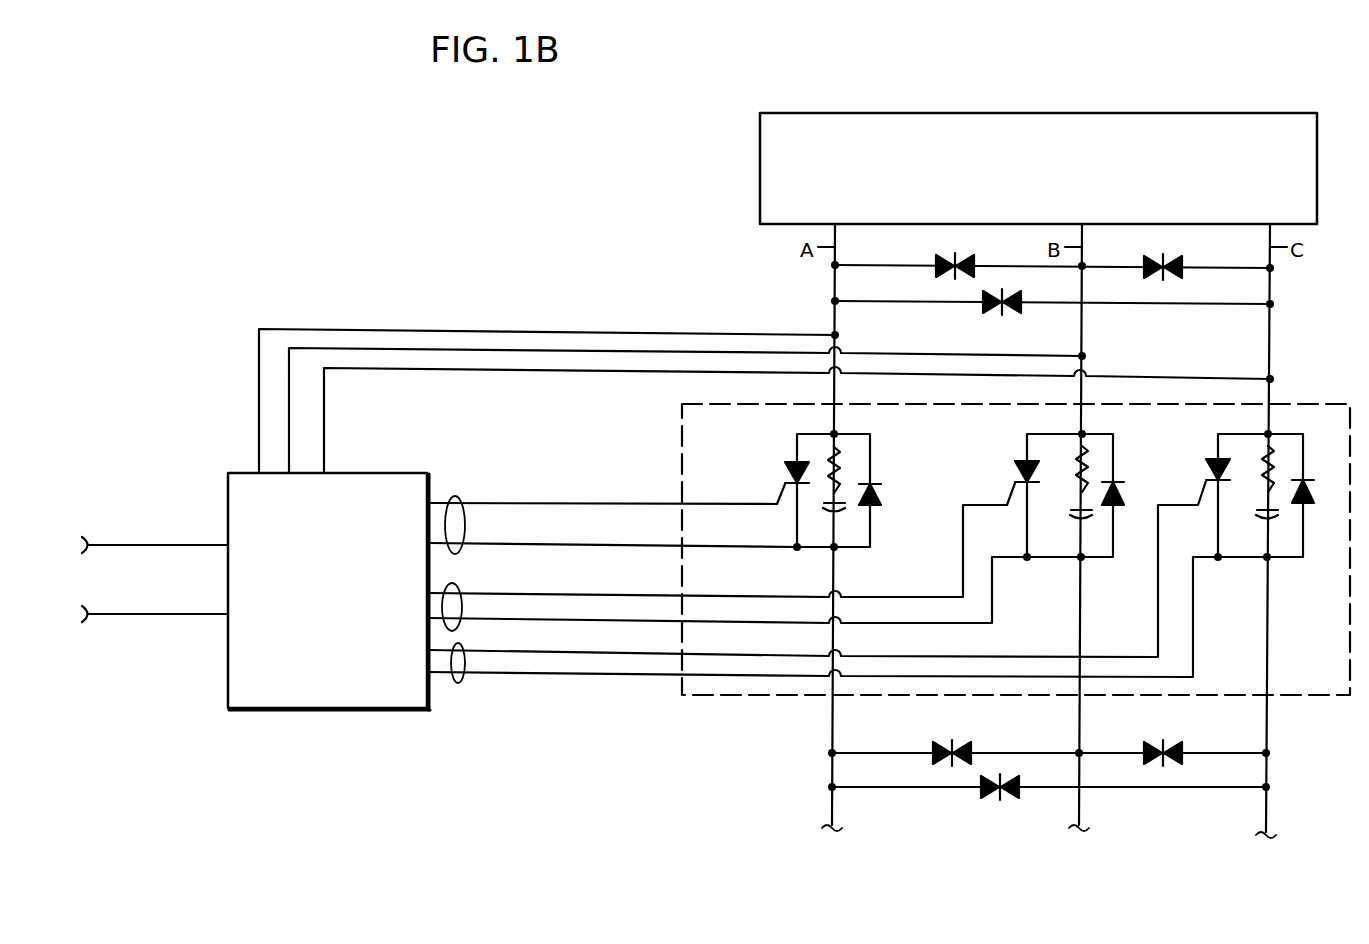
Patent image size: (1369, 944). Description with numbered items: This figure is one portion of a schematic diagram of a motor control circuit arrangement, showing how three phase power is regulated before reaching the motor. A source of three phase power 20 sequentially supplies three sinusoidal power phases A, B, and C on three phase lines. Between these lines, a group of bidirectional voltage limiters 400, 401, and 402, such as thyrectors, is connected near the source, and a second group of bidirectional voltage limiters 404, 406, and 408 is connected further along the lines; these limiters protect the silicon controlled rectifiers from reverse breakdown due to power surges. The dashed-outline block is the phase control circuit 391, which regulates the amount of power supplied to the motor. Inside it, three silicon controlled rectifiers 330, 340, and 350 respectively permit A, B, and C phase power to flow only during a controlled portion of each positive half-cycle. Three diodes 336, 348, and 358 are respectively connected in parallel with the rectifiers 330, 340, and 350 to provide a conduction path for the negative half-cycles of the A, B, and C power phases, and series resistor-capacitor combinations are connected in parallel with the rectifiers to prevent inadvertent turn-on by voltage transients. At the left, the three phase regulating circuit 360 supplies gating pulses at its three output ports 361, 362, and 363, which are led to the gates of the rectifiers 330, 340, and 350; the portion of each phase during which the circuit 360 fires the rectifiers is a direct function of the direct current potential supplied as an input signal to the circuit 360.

The source of three phase power 20 is at (1031, 210).
The bidirectional voltage limiter 400 is at (934, 262).
The bidirectional voltage limiter 401 is at (1178, 266).
The bidirectional voltage limiter 402 is at (986, 310).
The silicon controlled rectifier 330 is at (791, 467).
The diode 336 is at (882, 486).
The silicon controlled rectifier 340 is at (1020, 466).
The diode 348 is at (1117, 484).
The silicon controlled rectifier 350 is at (1213, 458).
The diode 358 is at (1316, 501).
The three phase regulating circuit 360 is at (355, 692).
The output port 361 is at (466, 517).
The output port 362 is at (463, 605).
The output port 363 is at (466, 677).
The phase control circuit 391 is at (708, 732).
The bidirectional voltage limiter 404 is at (1175, 751).
The bidirectional voltage limiter 406 is at (968, 747).
The bidirectional voltage limiter 408 is at (988, 794).